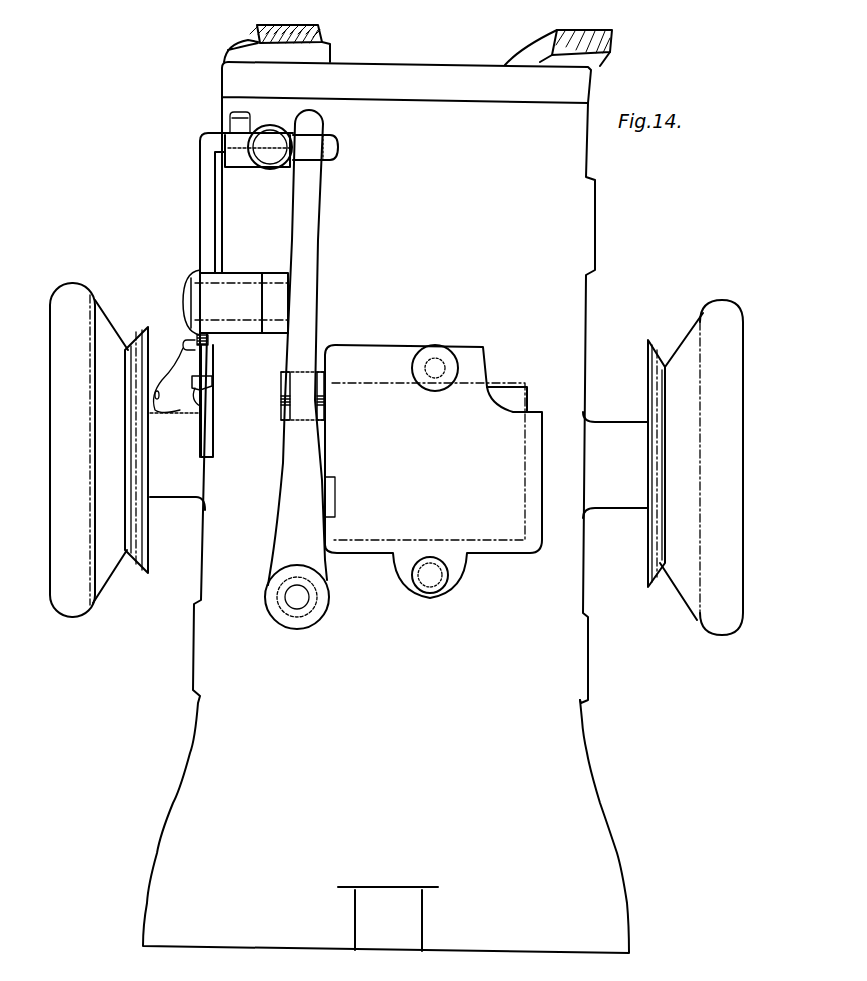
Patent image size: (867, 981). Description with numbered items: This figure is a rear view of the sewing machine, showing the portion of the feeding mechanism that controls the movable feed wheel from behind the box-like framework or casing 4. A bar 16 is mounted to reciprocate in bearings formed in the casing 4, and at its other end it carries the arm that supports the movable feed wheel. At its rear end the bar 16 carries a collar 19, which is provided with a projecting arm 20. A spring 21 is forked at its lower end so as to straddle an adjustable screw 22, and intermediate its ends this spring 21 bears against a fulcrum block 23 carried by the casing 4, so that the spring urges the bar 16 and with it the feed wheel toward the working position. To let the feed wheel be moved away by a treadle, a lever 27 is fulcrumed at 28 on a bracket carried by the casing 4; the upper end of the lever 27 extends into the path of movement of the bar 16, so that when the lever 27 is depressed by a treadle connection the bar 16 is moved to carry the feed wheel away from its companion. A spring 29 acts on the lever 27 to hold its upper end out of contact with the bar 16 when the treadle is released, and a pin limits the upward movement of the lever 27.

The box-like framework 4 is at (396, 489).
The bar 16 is at (260, 167).
The collar 19 is at (280, 165).
The projecting arm 20 is at (334, 148).
The spring 21 is at (308, 253).
The adjustable screw 22 is at (268, 594).
The fulcrum block 23 is at (282, 423).
The lever 27 is at (207, 197).
The fulcrum 28 is at (188, 287).
The spring 29 is at (207, 385).